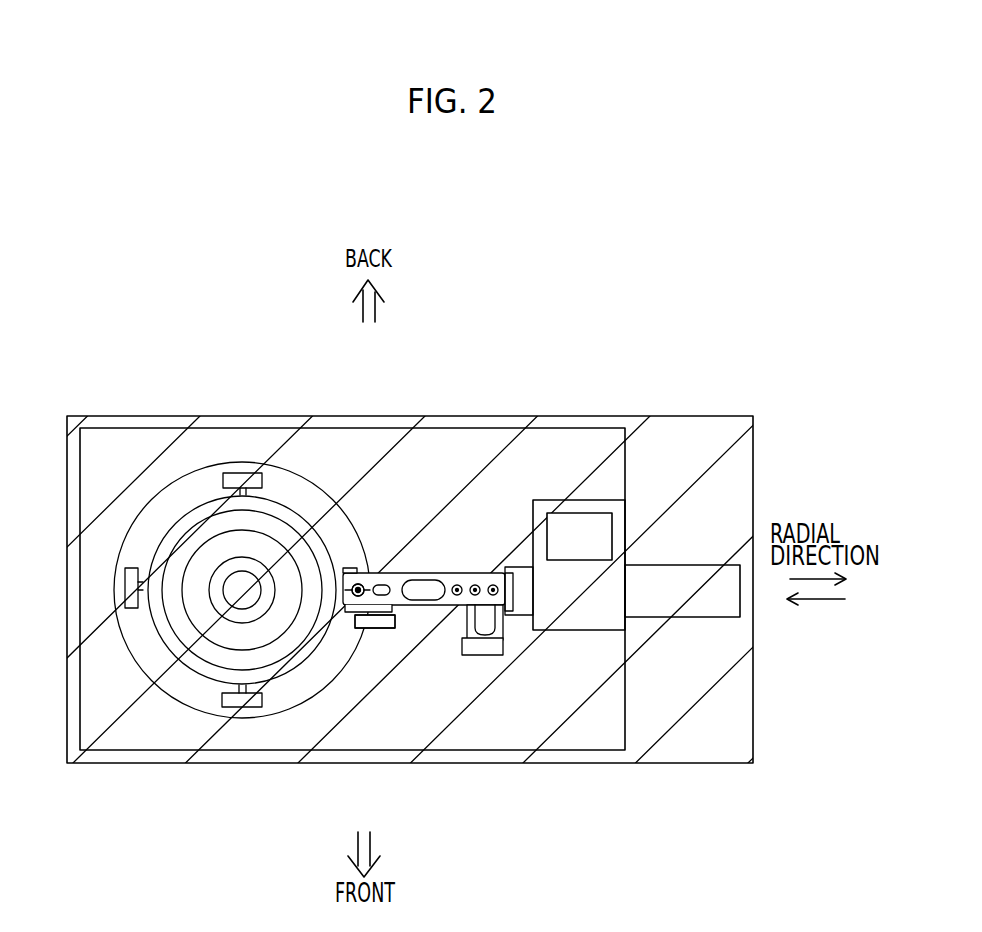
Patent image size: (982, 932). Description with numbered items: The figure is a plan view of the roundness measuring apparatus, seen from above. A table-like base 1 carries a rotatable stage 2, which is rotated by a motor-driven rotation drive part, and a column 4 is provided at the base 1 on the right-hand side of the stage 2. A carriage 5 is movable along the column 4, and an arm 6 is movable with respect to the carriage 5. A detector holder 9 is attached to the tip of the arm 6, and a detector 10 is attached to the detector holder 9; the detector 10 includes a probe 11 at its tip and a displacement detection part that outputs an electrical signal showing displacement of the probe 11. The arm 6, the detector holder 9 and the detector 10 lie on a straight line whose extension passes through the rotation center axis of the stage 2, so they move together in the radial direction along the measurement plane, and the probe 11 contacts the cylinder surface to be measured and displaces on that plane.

The base 1 is at (120, 747).
The stage 2 is at (195, 528).
The column 4 is at (577, 530).
The carriage 5 is at (618, 522).
The arm 6 is at (680, 617).
The detector holder 9 is at (450, 573).
The detector 10 is at (347, 570).
The probe 11 is at (347, 570).